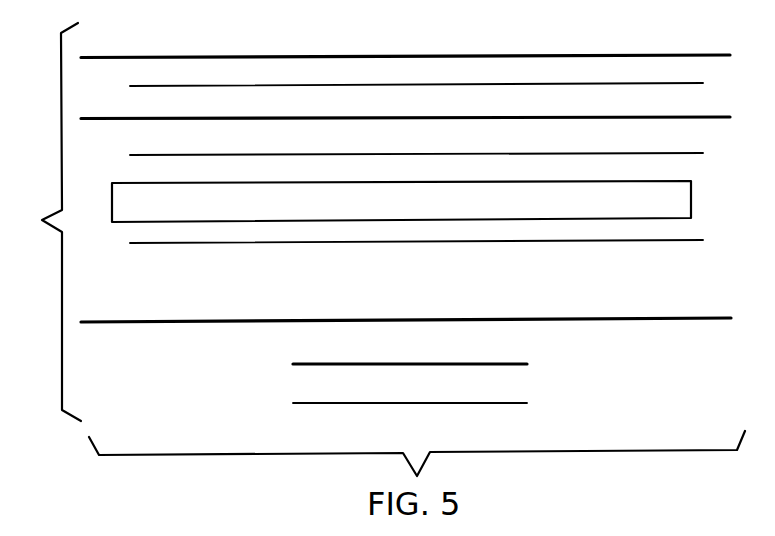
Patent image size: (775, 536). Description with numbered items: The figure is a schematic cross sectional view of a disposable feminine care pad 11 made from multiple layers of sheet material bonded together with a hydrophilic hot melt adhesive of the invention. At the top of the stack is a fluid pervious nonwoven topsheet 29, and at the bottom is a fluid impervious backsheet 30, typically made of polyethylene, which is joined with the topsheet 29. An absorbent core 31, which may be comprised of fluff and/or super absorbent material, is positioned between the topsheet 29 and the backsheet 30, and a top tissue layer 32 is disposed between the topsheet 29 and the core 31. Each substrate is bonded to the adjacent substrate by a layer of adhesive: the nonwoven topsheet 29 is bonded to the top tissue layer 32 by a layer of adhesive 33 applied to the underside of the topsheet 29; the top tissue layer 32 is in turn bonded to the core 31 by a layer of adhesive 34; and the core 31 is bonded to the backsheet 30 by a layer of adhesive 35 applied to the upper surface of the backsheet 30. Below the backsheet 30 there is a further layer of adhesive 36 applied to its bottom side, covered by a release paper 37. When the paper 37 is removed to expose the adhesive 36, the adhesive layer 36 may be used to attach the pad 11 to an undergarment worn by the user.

The feminine care pad 11 is at (49, 222).
The nonwoven topsheet 29 is at (566, 56).
The backsheet 30 is at (245, 321).
The absorbent core 31 is at (691, 188).
The top tissue layer 32 is at (407, 118).
The layer of adhesive 33 is at (272, 86).
The layer of adhesive 34 is at (560, 153).
The layer of adhesive 35 is at (414, 244).
The layer of adhesive 36 is at (470, 363).
The release paper 37 is at (350, 404).